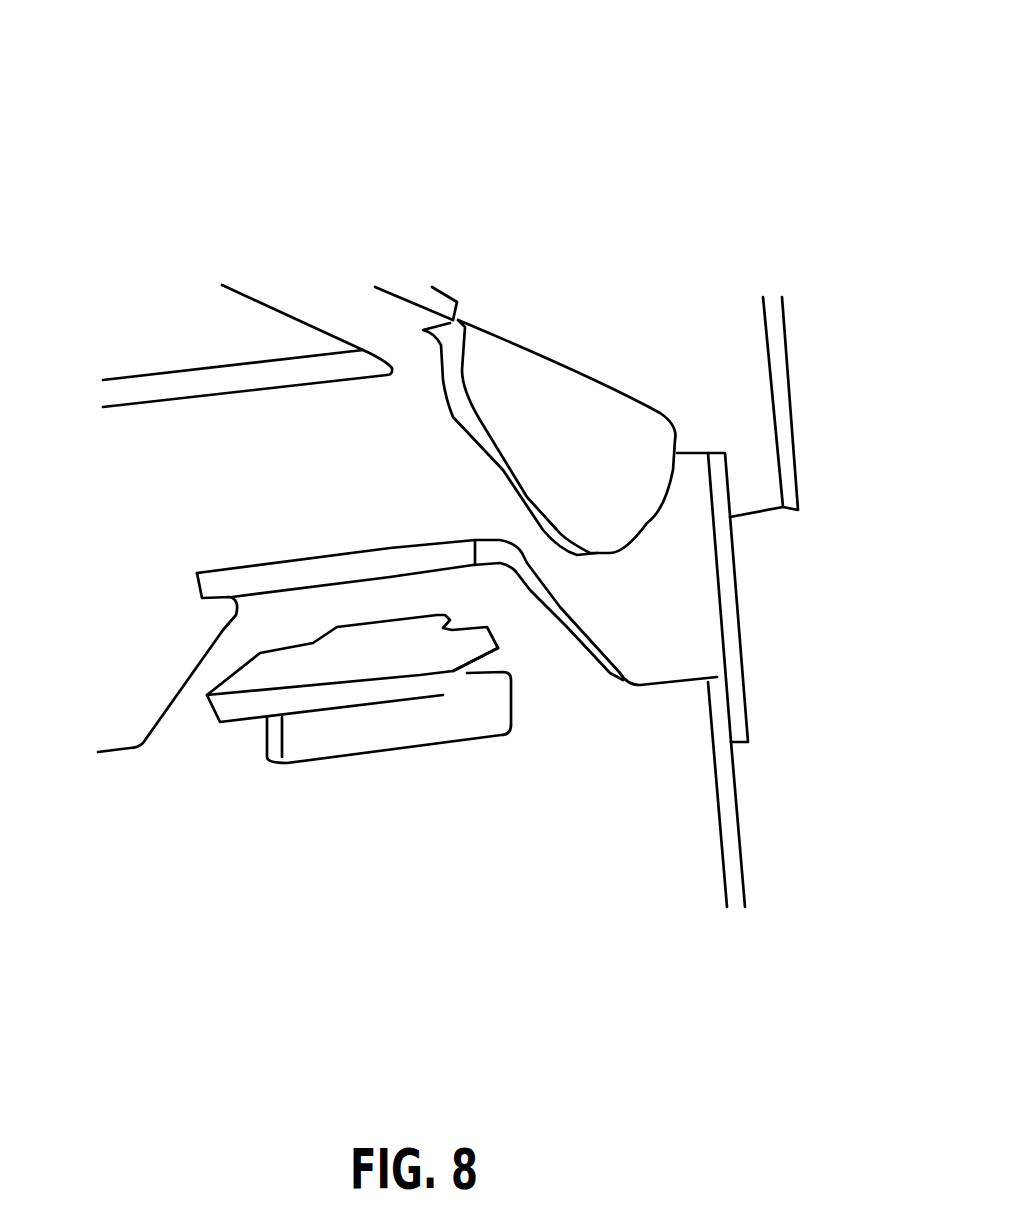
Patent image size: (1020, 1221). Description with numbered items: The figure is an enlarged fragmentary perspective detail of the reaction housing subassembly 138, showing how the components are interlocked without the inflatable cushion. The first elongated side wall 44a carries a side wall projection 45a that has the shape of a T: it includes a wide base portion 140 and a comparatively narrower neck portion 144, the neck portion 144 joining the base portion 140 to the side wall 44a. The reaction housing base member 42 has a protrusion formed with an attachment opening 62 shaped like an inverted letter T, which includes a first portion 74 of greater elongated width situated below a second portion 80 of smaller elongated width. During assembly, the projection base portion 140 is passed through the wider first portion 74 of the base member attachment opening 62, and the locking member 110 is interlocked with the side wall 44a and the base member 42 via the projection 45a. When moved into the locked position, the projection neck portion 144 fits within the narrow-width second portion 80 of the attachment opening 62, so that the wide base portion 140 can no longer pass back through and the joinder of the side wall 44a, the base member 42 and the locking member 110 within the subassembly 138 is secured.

The reaction housing subassembly 138 is at (533, 172).
The first elongated side wall 44a is at (778, 390).
The locking member 110 is at (665, 557).
The reaction housing base member 42 is at (667, 752).
The second portion 80 is at (313, 643).
The first portion 74 is at (512, 702).
The attachment opening 62 is at (488, 738).
The side wall projection 45a is at (317, 670).
The neck portion 144 is at (400, 620).
The base portion 140 is at (455, 668).